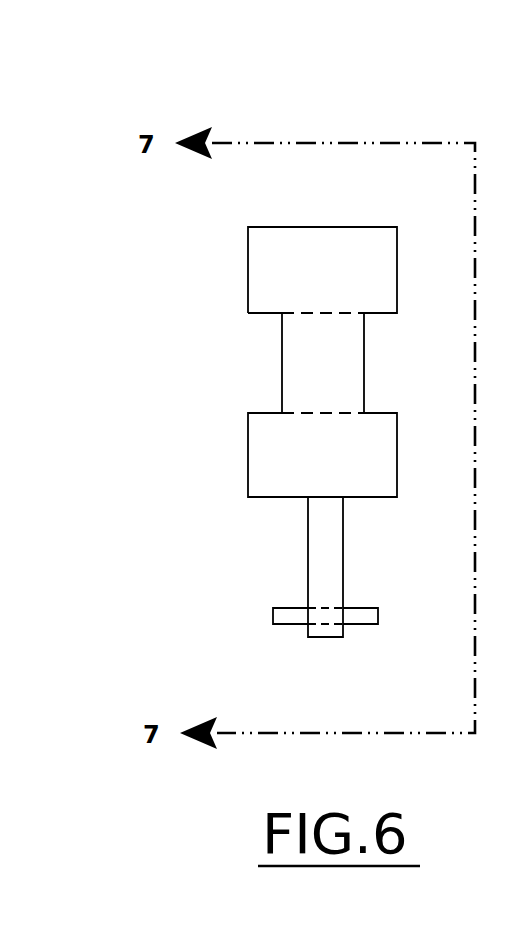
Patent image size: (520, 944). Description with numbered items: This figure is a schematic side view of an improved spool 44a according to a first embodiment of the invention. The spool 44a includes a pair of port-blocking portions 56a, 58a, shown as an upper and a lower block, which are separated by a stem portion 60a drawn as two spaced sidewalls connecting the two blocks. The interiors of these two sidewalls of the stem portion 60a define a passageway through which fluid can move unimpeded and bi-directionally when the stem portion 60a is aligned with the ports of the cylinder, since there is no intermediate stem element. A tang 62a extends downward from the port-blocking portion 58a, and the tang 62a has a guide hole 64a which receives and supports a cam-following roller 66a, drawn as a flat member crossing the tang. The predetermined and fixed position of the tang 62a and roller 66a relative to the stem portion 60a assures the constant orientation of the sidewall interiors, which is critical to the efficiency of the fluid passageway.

The spool 44a is at (222, 280).
The port-blocking portion 56a is at (365, 255).
The port-blocking portion 58a is at (277, 458).
The stem portion 60a is at (297, 352).
The tang 62a is at (327, 538).
The guide hole 64a is at (337, 612).
The cam-following roller 66a is at (283, 618).